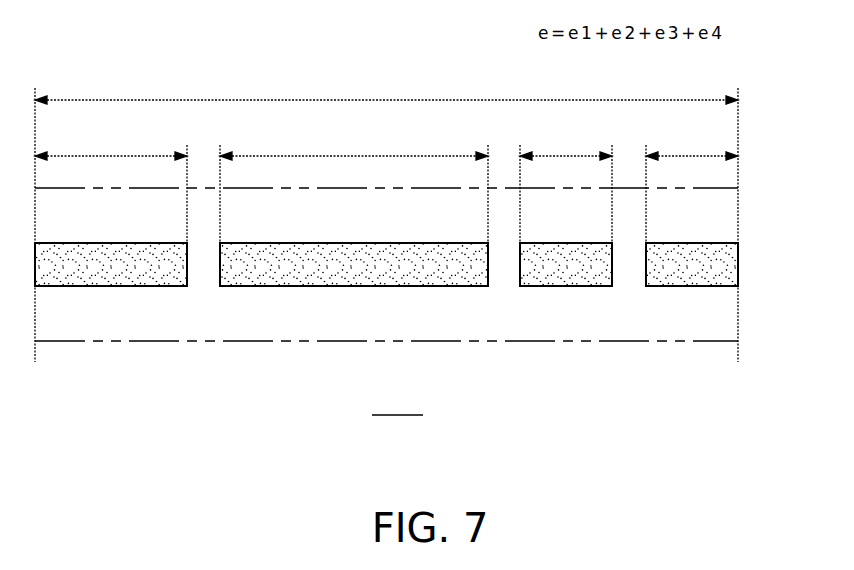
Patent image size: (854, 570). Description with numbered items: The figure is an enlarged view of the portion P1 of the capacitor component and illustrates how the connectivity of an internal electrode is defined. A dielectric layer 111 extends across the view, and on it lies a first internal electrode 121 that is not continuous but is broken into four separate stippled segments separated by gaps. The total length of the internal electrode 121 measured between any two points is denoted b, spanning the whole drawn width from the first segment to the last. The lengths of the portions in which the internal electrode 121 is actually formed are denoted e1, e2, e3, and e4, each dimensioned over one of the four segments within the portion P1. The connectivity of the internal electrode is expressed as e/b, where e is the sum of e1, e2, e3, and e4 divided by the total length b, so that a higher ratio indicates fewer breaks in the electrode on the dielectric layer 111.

The dielectric layer 111 is at (724, 318).
The first internal electrode 121 is at (726, 265).
The total length of the internal electrode b is at (386, 86).
The length of a first portion in which the internal electrode is actually formed e1 is at (111, 183).
The length of a second portion in which the internal electrode is actually formed e2 is at (354, 183).
The length of a third portion in which the internal electrode is actually formed e3 is at (566, 183).
The length of a fourth portion in which the internal electrode is actually formed e4 is at (692, 183).
The portion 'P1' P1 is at (398, 398).